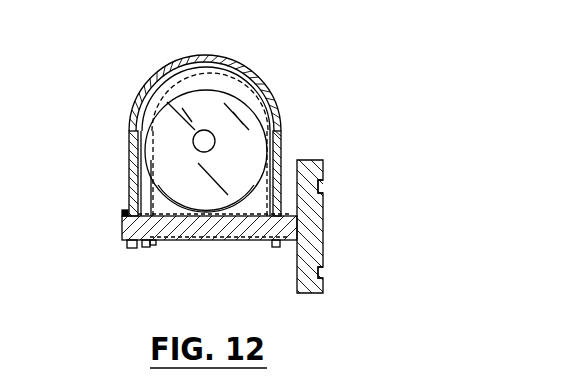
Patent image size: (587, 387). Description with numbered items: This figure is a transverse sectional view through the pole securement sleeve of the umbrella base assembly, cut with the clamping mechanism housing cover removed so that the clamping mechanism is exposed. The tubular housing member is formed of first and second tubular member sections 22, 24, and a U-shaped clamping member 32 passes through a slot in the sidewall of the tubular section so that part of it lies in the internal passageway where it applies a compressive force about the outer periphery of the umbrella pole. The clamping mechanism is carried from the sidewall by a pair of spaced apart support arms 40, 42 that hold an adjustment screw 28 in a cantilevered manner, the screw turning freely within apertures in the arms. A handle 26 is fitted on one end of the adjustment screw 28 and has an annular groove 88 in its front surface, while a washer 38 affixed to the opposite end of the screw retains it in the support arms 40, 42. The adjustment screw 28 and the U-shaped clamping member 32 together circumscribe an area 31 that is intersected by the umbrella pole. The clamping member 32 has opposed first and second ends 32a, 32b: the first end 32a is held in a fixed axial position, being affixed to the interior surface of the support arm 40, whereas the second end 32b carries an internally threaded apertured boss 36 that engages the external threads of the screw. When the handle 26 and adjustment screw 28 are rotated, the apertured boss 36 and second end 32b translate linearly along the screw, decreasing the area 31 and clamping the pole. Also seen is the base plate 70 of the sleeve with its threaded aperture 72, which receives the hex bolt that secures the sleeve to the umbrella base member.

The first tubular member section 22 is at (211, 57).
The second tubular member section 24 is at (205, 95).
The handle 26 is at (315, 220).
The adjustment screw 28 is at (222, 240).
The area 31 is at (256, 91).
The U-shaped clamping member 32 is at (130, 123).
The first end 32a is at (270, 242).
The second end 32b is at (155, 242).
The apertured boss 36 is at (143, 245).
The washer 38 is at (125, 242).
The support arm 40 is at (276, 176).
The support arm 42 is at (127, 192).
The base plate 70 is at (221, 101).
The threaded aperture 72 is at (200, 136).
The annular groove 88 is at (324, 183).